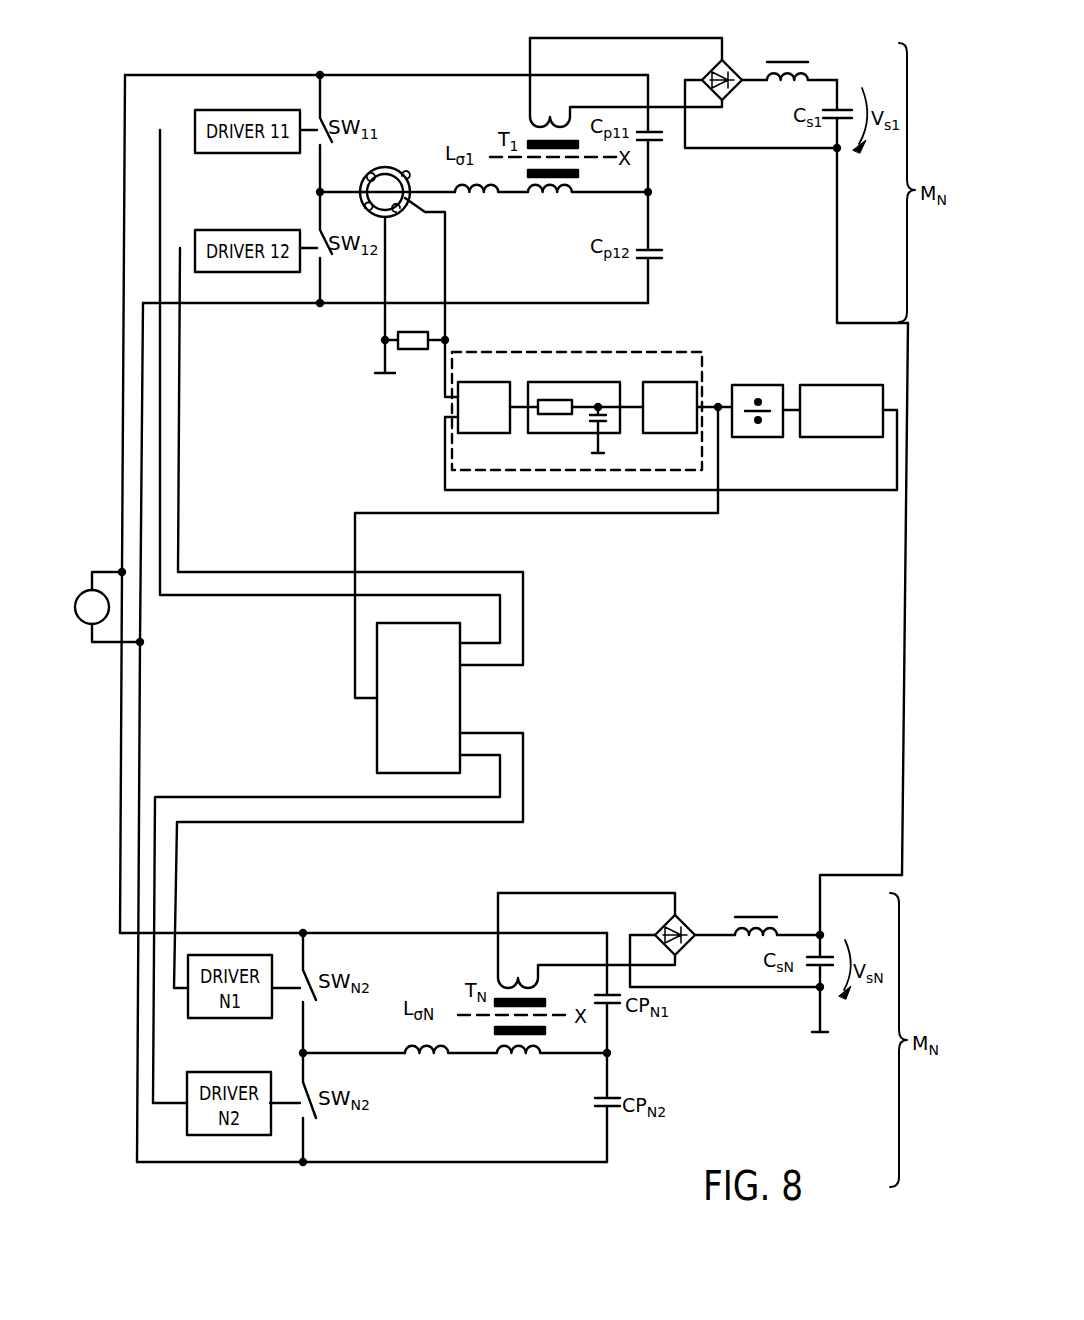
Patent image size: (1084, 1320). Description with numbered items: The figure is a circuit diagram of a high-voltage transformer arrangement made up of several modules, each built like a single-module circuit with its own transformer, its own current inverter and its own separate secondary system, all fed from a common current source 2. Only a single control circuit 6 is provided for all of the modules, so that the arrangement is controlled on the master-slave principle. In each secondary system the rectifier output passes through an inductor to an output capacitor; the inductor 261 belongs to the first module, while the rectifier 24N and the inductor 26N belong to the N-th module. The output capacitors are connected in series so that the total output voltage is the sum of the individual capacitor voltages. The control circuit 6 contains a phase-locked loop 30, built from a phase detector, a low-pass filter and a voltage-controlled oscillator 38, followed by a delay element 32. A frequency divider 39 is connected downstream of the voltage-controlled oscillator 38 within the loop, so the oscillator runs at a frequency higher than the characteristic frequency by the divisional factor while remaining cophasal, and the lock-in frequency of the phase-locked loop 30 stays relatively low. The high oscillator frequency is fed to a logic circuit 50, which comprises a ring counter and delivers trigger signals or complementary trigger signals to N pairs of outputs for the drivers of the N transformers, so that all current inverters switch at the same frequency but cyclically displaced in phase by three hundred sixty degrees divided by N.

The current source 2 is at (88, 626).
The control circuit 6 is at (584, 578).
The rectifier 24N is at (686, 917).
The filter inductor 261 is at (787, 60).
The filter inductor 26N is at (758, 916).
The phase-locked loop 30 is at (583, 382).
The delay element 32 is at (830, 385).
The voltage-controlled oscillator 38 is at (668, 434).
The frequency divider 39 is at (758, 385).
The logic circuit 50 is at (374, 730).